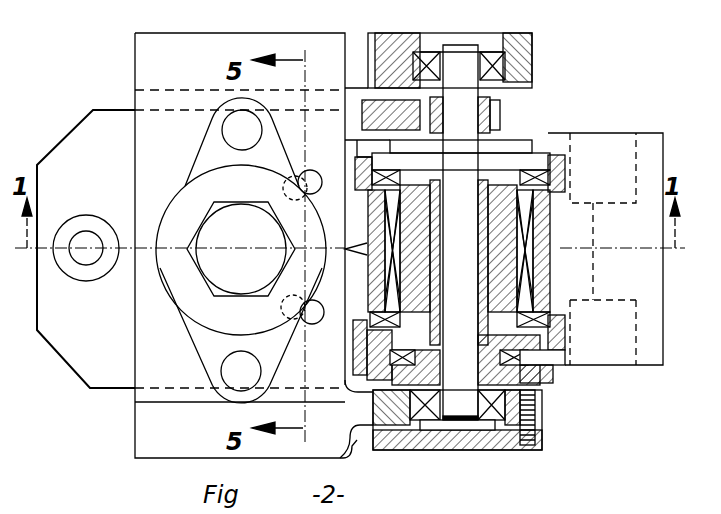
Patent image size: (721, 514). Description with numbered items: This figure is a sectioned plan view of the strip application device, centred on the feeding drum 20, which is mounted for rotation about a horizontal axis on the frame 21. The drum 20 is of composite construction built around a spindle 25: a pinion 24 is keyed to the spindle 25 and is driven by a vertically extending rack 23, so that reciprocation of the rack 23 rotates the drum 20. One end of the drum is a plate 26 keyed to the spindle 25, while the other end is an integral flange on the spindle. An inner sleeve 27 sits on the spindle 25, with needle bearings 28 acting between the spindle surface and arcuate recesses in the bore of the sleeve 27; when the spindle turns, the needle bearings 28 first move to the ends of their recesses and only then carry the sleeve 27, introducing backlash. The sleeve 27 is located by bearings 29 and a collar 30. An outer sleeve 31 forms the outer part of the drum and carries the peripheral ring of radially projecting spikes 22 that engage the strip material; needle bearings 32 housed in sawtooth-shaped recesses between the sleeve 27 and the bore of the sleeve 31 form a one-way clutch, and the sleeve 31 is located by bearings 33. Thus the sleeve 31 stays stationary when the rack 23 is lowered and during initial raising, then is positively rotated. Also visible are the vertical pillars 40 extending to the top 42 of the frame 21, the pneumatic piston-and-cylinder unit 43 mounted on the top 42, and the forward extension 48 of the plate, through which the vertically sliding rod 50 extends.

The feeding drum 20 is at (547, 140).
The frame 21 is at (388, 38).
The spikes 22 is at (560, 245).
The rack 23 is at (362, 118).
The pinion 24 is at (500, 113).
The spindle 25 is at (458, 50).
The plate 26 is at (548, 392).
The sleeve 27 is at (505, 226).
The needle bearings 28 is at (484, 205).
The bearings 29 is at (565, 342).
The collar 30 is at (432, 272).
The sleeve 31 is at (535, 294).
The needle bearings 32 is at (525, 295).
The bearings 33 is at (560, 176).
The pillars 40 is at (316, 176).
The top of the frame 42 is at (215, 47).
The pneumatic piston-and-cylinder unit 43 is at (178, 200).
The forward extension 48 is at (75, 141).
The rod 50 is at (83, 262).